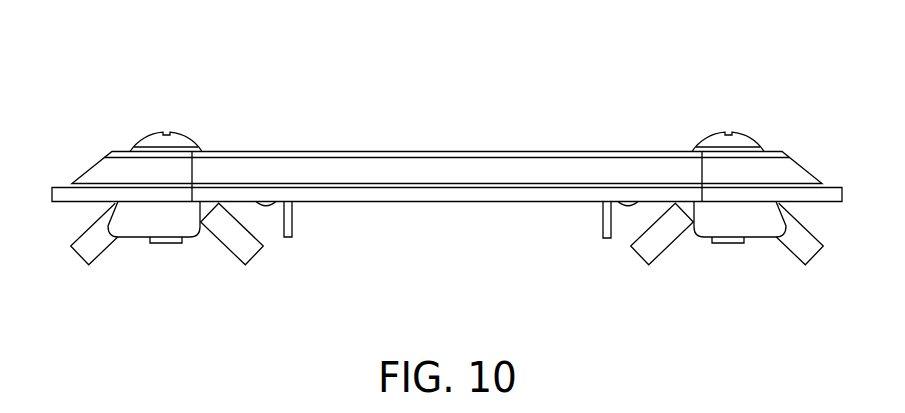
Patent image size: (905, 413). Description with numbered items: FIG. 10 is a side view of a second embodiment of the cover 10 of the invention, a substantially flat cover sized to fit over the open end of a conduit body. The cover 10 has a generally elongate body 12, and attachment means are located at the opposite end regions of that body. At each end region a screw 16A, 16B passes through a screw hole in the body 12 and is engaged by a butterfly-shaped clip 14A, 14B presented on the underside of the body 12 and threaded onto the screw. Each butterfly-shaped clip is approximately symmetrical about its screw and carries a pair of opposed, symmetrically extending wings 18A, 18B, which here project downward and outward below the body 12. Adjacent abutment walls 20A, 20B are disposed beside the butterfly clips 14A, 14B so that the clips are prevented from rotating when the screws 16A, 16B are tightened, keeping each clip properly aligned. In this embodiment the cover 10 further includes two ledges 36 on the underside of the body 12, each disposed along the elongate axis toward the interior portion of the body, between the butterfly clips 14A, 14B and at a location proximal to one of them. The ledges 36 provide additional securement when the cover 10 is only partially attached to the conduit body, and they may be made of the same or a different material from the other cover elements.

The cover 10 is at (647, 112).
The elongate body 12 is at (447, 151).
The butterfly shaped clip 14A is at (167, 243).
The butterfly shaped clip 14B is at (727, 243).
The screw 16A is at (165, 131).
The screw 16B is at (730, 132).
The wings 18A is at (230, 246).
The wings 18B is at (793, 240).
The abutment wall 20A is at (130, 213).
The abutment wall 20B is at (762, 218).
The ledge 36 is at (288, 222).